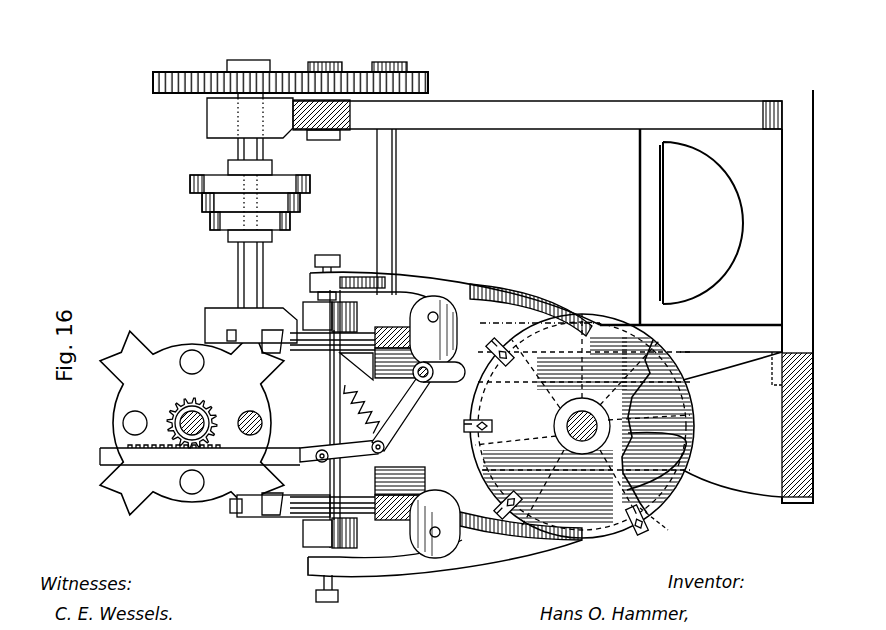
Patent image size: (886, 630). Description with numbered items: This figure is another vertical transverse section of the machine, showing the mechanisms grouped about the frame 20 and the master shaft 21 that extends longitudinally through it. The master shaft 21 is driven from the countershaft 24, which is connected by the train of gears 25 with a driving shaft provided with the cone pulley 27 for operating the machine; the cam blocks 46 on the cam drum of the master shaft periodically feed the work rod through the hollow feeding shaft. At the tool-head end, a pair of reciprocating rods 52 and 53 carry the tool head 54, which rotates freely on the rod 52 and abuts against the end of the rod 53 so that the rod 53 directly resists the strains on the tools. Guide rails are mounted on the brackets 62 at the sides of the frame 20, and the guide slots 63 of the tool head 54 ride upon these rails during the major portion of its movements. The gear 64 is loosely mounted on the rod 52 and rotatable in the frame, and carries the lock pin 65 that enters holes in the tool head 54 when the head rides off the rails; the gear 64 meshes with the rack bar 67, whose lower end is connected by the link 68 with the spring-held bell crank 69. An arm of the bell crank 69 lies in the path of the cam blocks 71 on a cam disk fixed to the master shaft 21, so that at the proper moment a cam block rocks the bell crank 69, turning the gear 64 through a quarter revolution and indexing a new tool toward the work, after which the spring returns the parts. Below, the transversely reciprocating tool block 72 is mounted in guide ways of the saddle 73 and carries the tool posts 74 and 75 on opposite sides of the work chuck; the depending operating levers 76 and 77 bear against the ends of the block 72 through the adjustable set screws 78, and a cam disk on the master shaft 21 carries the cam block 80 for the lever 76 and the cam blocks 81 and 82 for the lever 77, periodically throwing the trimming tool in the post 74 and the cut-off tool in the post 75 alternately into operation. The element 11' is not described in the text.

The frame 20 is at (648, 200).
The train of gears 25 is at (357, 77).
The countershaft 24 is at (379, 190).
The tool post 74 is at (238, 300).
The cone pulley 27 is at (195, 183).
The cam blocks 46 is at (232, 220).
The guide slots 63 is at (128, 336).
The tool head 54 is at (184, 352).
The gear 64 is at (172, 400).
The lock pin 65 is at (178, 396).
The reciprocating rod 53 is at (250, 410).
The reciprocating rod 52 is at (203, 411).
The rack bar 67 is at (158, 463).
The tool post 75 is at (241, 518).
The brackets 62 is at (262, 342).
The tool block 72 is at (310, 312).
The set screws 78 is at (328, 256).
The operating lever 76 is at (447, 292).
The operating lever 77 is at (433, 573).
The link 68 is at (335, 447).
The bell crank 69 is at (398, 420).
The saddle 73 is at (372, 412).
The master shaft 21 is at (574, 426).
The ring 11' is at (582, 402).
The cam block 80 is at (648, 336).
The cam block 82 is at (680, 480).
The cam block 81 is at (661, 522).
The cam blocks 71 is at (495, 378).